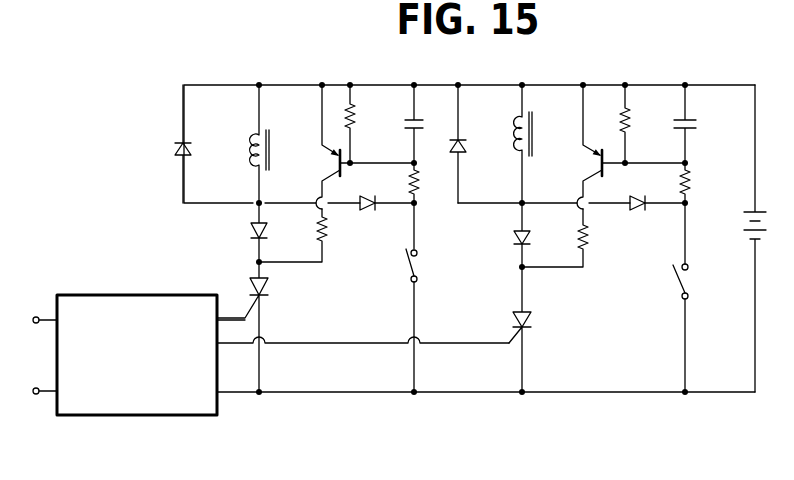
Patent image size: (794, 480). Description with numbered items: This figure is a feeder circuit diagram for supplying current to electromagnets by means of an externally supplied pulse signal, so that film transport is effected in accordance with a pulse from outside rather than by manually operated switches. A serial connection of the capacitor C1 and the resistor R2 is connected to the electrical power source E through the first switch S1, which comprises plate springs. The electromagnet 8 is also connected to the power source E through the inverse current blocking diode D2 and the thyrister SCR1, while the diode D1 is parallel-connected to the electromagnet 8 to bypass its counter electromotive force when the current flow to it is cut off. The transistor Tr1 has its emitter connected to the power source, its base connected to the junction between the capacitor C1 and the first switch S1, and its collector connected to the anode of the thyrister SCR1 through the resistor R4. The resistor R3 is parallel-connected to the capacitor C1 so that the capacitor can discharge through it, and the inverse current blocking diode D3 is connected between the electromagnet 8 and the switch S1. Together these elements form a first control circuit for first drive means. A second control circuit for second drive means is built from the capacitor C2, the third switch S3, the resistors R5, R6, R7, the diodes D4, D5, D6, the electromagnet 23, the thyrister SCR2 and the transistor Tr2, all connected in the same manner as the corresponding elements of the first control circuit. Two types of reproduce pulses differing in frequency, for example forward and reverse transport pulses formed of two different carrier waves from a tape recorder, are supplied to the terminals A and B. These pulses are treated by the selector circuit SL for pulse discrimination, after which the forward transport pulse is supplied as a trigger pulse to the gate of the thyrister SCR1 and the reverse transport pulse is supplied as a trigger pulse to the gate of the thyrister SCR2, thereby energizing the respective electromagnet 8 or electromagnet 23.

The diode D1 is at (176, 144).
The electromagnet 8 is at (249, 145).
The transistor Tr1 is at (345, 147).
The resistor R3 is at (356, 115).
The capacitor C1 is at (405, 123).
The resistor R2 is at (418, 186).
The inverse current blocking diode D3 is at (370, 213).
The inverse current blocking diode D2 is at (251, 230).
The resistor R4 is at (318, 232).
The thyrister SCR1 is at (252, 284).
The first switch S1 is at (405, 269).
The electromagnet 23 is at (520, 129).
The diode D4 is at (465, 145).
The transistor Tr2 is at (583, 170).
The resistor R7 is at (582, 239).
The diode D5 is at (513, 236).
The thyrister SCR2 is at (534, 314).
The resistor R6 is at (628, 115).
The capacitor C2 is at (697, 123).
The resistor R5 is at (690, 184).
The diode D6 is at (636, 209).
The third switch S3 is at (673, 282).
The electrical power source E is at (744, 224).
The selector circuit SL is at (218, 400).
The terminal A is at (35, 321).
The terminal B is at (35, 392).